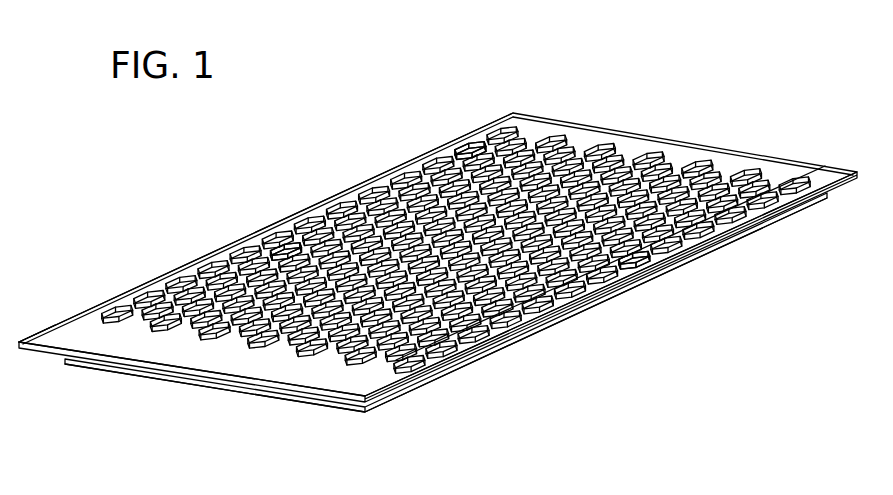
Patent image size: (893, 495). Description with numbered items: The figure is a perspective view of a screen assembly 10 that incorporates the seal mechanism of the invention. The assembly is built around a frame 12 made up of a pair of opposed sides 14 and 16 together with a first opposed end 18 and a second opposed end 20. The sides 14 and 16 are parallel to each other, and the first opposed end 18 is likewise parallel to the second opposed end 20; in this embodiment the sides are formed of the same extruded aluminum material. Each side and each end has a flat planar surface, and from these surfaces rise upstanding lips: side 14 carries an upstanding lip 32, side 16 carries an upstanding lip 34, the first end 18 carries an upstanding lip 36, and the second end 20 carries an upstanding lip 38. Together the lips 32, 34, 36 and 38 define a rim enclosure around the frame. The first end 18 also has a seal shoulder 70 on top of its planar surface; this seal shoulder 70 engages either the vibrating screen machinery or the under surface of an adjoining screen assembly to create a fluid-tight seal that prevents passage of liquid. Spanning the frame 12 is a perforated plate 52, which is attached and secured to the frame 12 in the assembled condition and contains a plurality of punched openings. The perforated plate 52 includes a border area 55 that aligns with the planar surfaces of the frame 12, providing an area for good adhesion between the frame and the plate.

The screen assembly 10 is at (553, 83).
The frame 12 is at (192, 398).
The side 14 is at (188, 249).
The side 16 is at (648, 294).
The first opposed end 18 is at (248, 395).
The second opposed end 20 is at (757, 134).
The upstanding lip 32 is at (378, 178).
The upstanding lip 34 is at (549, 306).
The upstanding lip 36 is at (299, 385).
The upstanding lip 38 is at (630, 133).
The perforated plate 52 is at (297, 247).
The border area 55 is at (460, 144).
The seal shoulder 70 is at (33, 334).